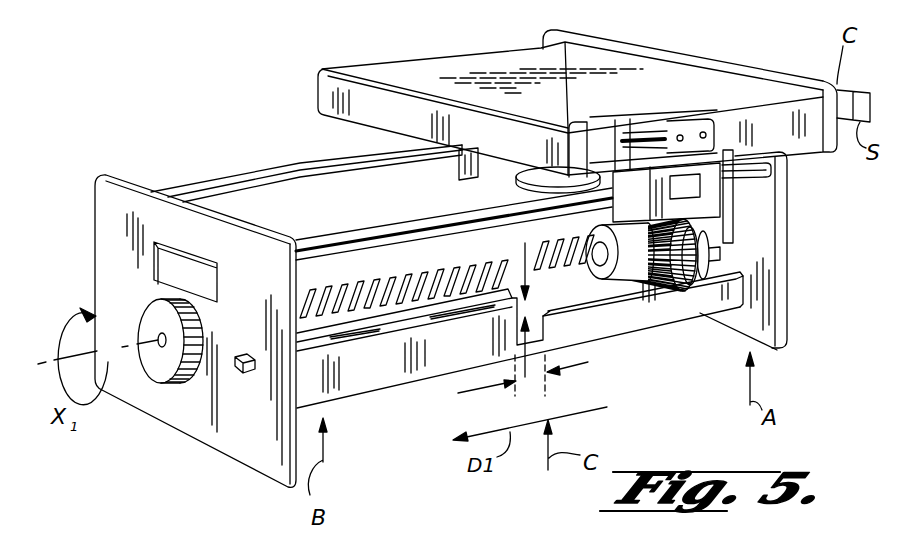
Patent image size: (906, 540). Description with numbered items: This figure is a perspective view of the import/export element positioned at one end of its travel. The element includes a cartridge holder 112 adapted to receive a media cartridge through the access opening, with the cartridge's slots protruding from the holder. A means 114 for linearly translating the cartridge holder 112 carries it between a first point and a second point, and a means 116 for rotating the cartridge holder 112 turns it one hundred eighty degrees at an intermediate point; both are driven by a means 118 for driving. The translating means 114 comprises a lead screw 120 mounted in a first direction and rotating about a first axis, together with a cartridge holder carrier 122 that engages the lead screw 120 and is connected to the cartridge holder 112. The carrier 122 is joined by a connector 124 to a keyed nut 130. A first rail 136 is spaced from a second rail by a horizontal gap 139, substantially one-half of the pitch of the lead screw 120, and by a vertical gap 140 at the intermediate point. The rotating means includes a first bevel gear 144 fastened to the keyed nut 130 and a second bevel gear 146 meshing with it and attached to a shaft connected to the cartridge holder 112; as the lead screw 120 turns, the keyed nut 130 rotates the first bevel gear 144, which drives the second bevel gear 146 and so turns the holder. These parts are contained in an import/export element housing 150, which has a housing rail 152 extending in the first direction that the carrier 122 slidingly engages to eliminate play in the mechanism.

The cartridge holder 112 is at (447, 67).
The means for linearly translating the cartridge holder 114 is at (312, 165).
The means for rotating the cartridge holder 116 is at (754, 255).
The means for driving 118 is at (157, 313).
The lead screw 120 is at (322, 168).
The cartridge holder carrier 122 is at (717, 177).
The connector 124 is at (789, 185).
The keyed nut 130 is at (717, 266).
The first rail 136 is at (705, 312).
The horizontal gap 139 is at (588, 362).
The vertical gap 140 is at (510, 260).
The first bevel gear 144 is at (706, 243).
The second bevel gear 146 is at (547, 180).
The import/export element housing 150 is at (257, 443).
The housing rail 152 is at (182, 193).